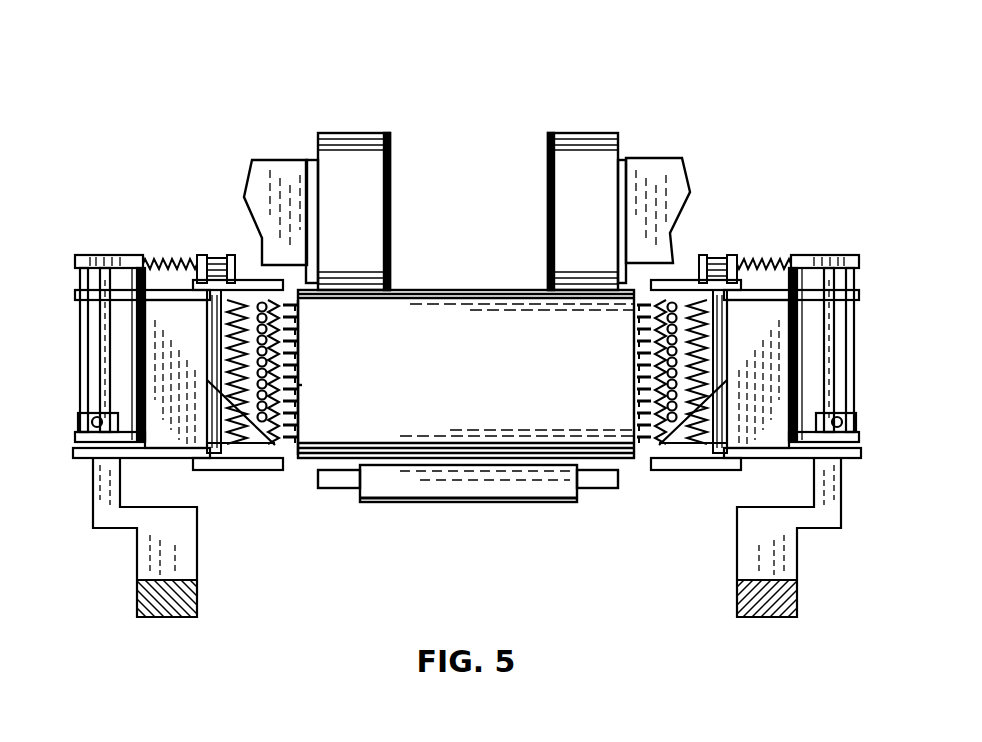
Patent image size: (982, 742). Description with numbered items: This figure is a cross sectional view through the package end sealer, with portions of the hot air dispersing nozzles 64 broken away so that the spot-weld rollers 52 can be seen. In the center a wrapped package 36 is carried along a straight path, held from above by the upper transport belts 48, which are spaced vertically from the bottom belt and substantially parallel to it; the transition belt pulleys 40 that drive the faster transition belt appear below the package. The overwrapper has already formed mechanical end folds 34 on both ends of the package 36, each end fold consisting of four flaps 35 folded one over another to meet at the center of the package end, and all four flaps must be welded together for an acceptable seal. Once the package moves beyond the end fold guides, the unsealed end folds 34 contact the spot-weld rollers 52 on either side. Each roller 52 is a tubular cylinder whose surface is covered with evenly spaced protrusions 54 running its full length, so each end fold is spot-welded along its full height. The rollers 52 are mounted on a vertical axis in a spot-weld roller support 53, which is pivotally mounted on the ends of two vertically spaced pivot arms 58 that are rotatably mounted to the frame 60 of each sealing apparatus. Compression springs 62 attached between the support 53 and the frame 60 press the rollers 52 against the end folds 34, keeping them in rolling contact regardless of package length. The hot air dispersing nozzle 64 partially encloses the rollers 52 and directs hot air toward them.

The end folds 34 is at (300, 388).
The flaps 35 is at (300, 342).
The package 36 is at (498, 288).
The transition belt pulleys 40 is at (577, 495).
The upper transport belts 48 is at (365, 135).
The spot-weld rollers 52 is at (210, 346).
The spot-weld roller support 53 is at (680, 285).
The protrusions 54 is at (632, 397).
The pivot arms 58 is at (180, 302).
The frame 60 is at (137, 561).
The compression springs 62 is at (160, 258).
The hot air dispersing nozzle 64 is at (138, 348).